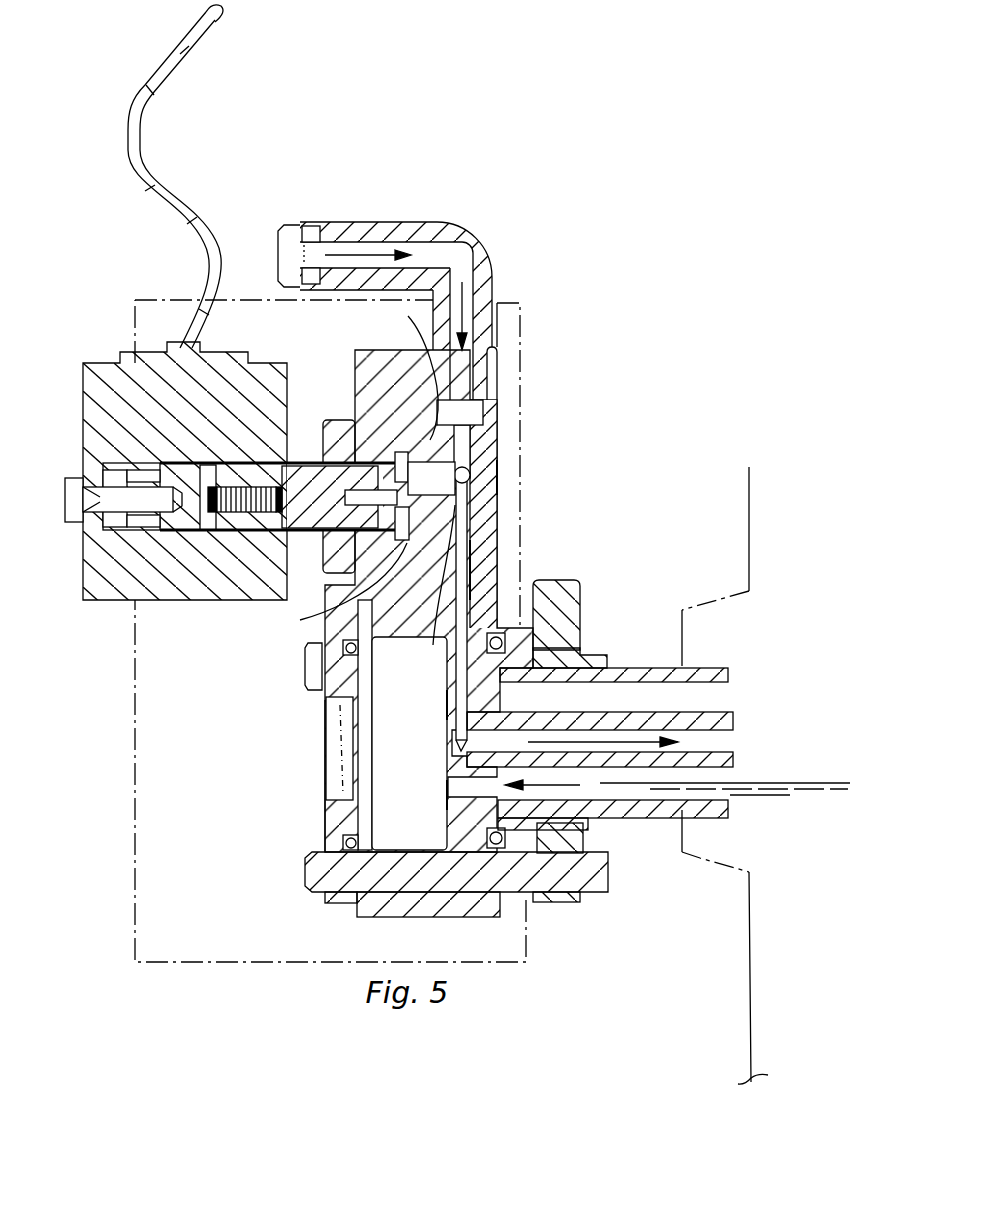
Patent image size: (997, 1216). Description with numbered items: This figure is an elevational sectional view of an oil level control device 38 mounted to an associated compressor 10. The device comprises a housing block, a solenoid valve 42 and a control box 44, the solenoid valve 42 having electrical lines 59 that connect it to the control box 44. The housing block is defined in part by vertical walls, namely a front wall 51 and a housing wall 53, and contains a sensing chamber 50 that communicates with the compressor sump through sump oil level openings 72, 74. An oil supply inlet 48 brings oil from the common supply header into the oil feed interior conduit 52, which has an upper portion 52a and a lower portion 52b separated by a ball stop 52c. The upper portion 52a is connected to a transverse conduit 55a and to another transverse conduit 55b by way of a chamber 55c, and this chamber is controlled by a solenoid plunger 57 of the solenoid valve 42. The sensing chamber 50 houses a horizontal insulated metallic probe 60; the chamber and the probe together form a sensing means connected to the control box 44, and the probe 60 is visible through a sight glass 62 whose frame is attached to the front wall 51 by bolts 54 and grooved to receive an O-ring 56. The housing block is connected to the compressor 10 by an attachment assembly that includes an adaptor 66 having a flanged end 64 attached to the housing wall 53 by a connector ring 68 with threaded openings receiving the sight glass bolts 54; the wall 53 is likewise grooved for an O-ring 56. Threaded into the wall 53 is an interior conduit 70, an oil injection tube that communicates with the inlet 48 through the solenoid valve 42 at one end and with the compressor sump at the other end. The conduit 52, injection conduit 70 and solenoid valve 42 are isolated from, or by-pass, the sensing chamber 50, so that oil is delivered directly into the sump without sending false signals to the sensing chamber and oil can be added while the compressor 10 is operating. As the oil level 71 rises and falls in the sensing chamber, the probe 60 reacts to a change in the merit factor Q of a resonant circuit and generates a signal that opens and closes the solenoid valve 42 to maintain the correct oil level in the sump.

The compressor 10 is at (746, 900).
The oil level control device 38 is at (500, 277).
The solenoid valve 42 is at (80, 406).
The control box 44 is at (128, 708).
The oil supply inlet 48 is at (333, 220).
The sensing chamber 50 is at (323, 797).
The front wall 51 is at (355, 383).
The oil feed interior conduit 52 is at (480, 522).
The upper portion of interior conduit 52a is at (475, 445).
The lower portion of interior conduit 52b is at (473, 568).
The ball stop 52c is at (500, 478).
The housing wall 53 is at (500, 378).
The bolts 54 is at (305, 676).
The transverse conduit 55a is at (393, 374).
The transverse conduit 55b is at (413, 677).
The chamber 55c is at (322, 613).
The O-ring 56 is at (346, 840).
The solenoid plunger 57 is at (305, 537).
The electrical lines 59 is at (130, 162).
The probe 60 is at (323, 743).
The sight glass 62 is at (323, 718).
The flanged end 64 is at (527, 900).
The adaptor 66 is at (655, 668).
The connector ring 68 is at (582, 608).
The interior conduit 70 is at (658, 770).
The oil level 71 is at (753, 785).
The sump oil level opening 72 is at (447, 790).
The sump oil level opening 74 is at (447, 706).